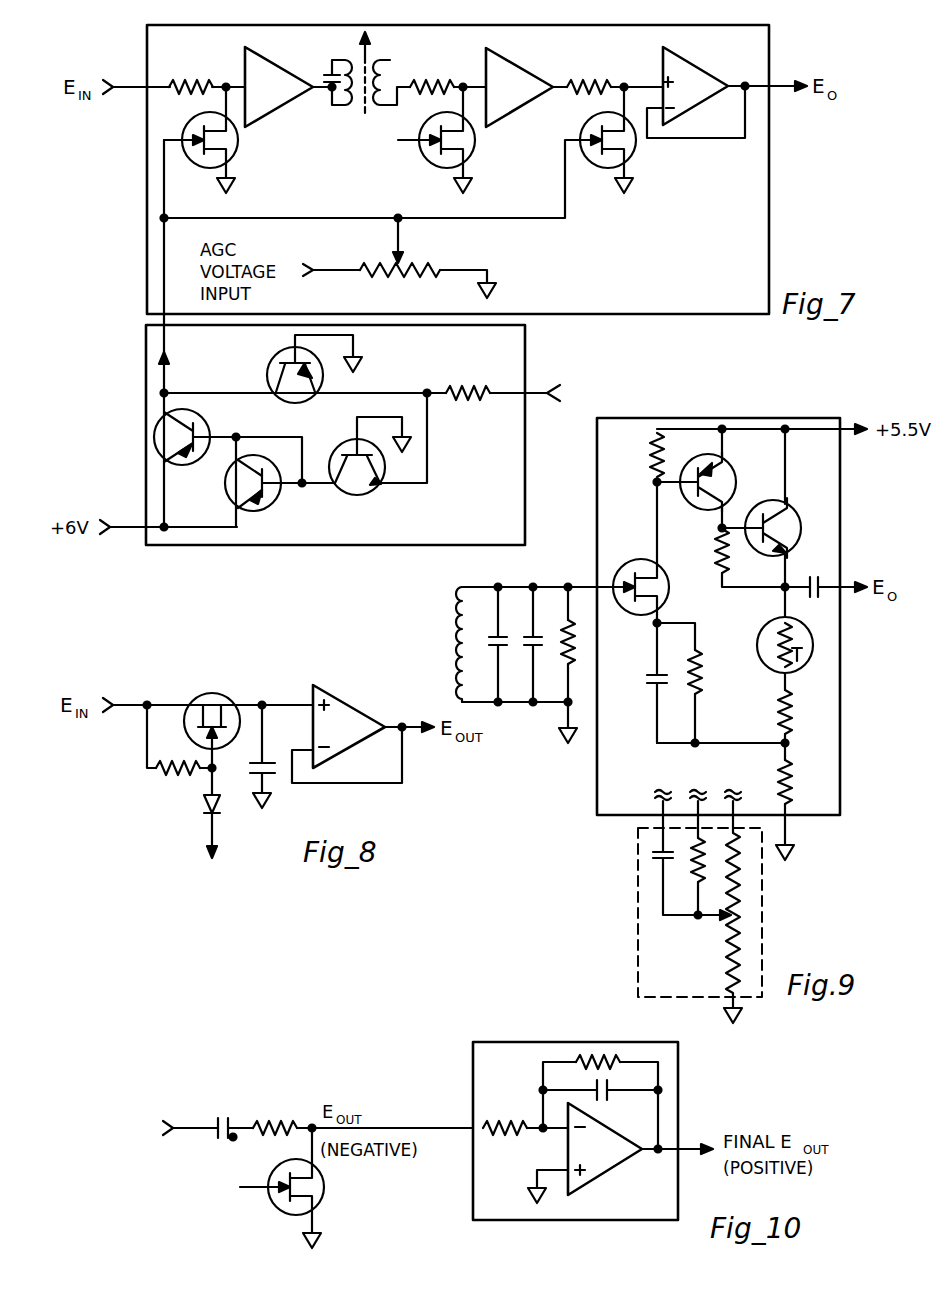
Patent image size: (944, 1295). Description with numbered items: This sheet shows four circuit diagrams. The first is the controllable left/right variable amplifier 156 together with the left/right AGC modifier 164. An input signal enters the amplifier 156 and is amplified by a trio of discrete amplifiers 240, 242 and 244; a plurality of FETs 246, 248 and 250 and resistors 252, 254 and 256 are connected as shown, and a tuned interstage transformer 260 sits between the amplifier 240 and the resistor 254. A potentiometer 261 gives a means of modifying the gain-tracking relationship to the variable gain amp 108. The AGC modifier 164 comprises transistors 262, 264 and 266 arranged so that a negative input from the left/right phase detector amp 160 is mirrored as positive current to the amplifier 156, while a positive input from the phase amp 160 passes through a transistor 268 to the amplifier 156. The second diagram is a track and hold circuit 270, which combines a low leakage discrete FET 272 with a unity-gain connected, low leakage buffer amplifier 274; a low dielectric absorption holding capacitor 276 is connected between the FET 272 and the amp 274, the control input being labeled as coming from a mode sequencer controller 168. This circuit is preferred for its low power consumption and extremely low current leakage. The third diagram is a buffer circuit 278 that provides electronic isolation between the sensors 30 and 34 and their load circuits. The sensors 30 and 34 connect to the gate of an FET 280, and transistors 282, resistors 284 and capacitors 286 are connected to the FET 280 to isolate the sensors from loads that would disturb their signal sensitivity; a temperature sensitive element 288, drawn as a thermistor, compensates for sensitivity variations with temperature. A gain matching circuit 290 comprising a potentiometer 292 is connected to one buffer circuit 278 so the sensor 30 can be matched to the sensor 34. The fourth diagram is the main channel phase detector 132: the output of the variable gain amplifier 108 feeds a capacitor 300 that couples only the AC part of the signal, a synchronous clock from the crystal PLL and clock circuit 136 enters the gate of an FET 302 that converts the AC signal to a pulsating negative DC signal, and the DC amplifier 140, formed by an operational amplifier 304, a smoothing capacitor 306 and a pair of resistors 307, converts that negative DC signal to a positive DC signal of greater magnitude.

In FIG. 7, the controllable left/right variable amplifier 156 is at (769, 190).
In FIG. 7, the left/right AGC modifier 164 is at (252, 545).
In FIG. 7, the discrete amplifier 240 is at (279, 87).
In FIG. 7, the discrete amplifier 242 is at (519, 87).
In FIG. 7, the discrete amplifier 244 is at (720, 66).
In FIG. 7, the FET 246 is at (240, 148).
In FIG. 7, the FET 248 is at (475, 148).
In FIG. 7, the FET 250 is at (630, 152).
In FIG. 7, the resistor 252 is at (191, 80).
In FIG. 7, the resistor 254 is at (376, 82).
In FIG. 7, the resistor 256 is at (589, 80).
In FIG. 7, the tuned interstage transformer 260 is at (391, 66).
In FIG. 7, the potentiometer 261 is at (416, 262).
In FIG. 7, the transistor 262 is at (352, 492).
In FIG. 7, the transistor 264 is at (270, 512).
In FIG. 7, the transistor 266 is at (212, 420).
In FIG. 7, the transistor 268 is at (268, 373).
In FIG. 7, the left/right phase detector amp 160 is at (672, 391).
In FIG. 8, the track and hold circuit 270 is at (166, 786).
In FIG. 8, the low leakage discrete FET 272 is at (208, 690).
In FIG. 8, the unity-gain connected low leakage buffer amplifier 274 is at (370, 701).
In FIG. 8, the low dielectric absorption holding capacitor 276 is at (275, 766).
In FIG. 8, the mode sequencer controller 168 is at (190, 910).
In FIG. 9, the buffer circuit 278 is at (840, 690).
In FIG. 9, the sensor 30 is at (410, 644).
In FIG. 9, the sensor 34 is at (452, 632).
In FIG. 9, the FET 280 is at (646, 563).
In FIG. 9, the transistor 282 is at (757, 496).
In FIG. 9, the resistor 284 is at (652, 472).
In FIG. 9, the capacitor 286 is at (812, 578).
In FIG. 9, the thermistor 288 is at (768, 670).
In FIG. 9, the gain matching circuit 290 is at (670, 912).
In FIG. 9, the potentiometer 292 is at (720, 926).
In FIG. 10, the capacitor 300 is at (224, 1118).
In FIG. 10, the FET 302 is at (319, 1211).
In FIG. 10, the main channel phase detector 132 is at (314, 1191).
In FIG. 10, the operational amplifier 304 is at (605, 1149).
In FIG. 10, the smoothing capacitor 306 is at (601, 1101).
In FIG. 10, the resistor 307 is at (502, 1122).
In FIG. 10, the DC amplifier 140 is at (572, 1220).
In FIG. 10, the variable gain amplifier 108 is at (95, 1127).
In FIG. 10, the crystal PLL and clock circuit 136 is at (129, 1212).